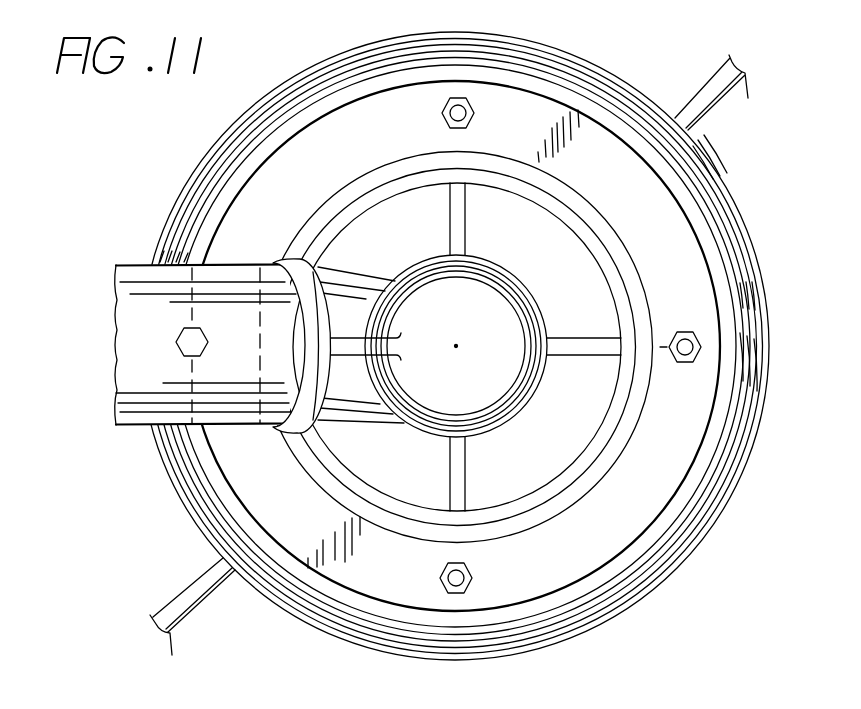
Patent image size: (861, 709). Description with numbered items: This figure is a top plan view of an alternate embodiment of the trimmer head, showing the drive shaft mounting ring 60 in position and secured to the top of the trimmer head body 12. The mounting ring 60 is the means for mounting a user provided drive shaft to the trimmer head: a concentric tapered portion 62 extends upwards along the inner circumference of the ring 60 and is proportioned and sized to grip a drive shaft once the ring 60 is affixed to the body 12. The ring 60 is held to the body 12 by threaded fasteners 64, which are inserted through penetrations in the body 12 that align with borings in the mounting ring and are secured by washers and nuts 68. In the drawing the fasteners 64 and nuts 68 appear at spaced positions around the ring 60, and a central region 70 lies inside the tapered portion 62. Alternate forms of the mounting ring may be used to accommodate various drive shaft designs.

The trimmer head body 12 is at (597, 80).
The drive shaft mounting ring 60 is at (697, 297).
The concentric tapered portion 62 is at (632, 443).
The threaded fasteners 64 is at (441, 110).
The nuts 68 is at (467, 123).
The spoke 70 is at (590, 307).